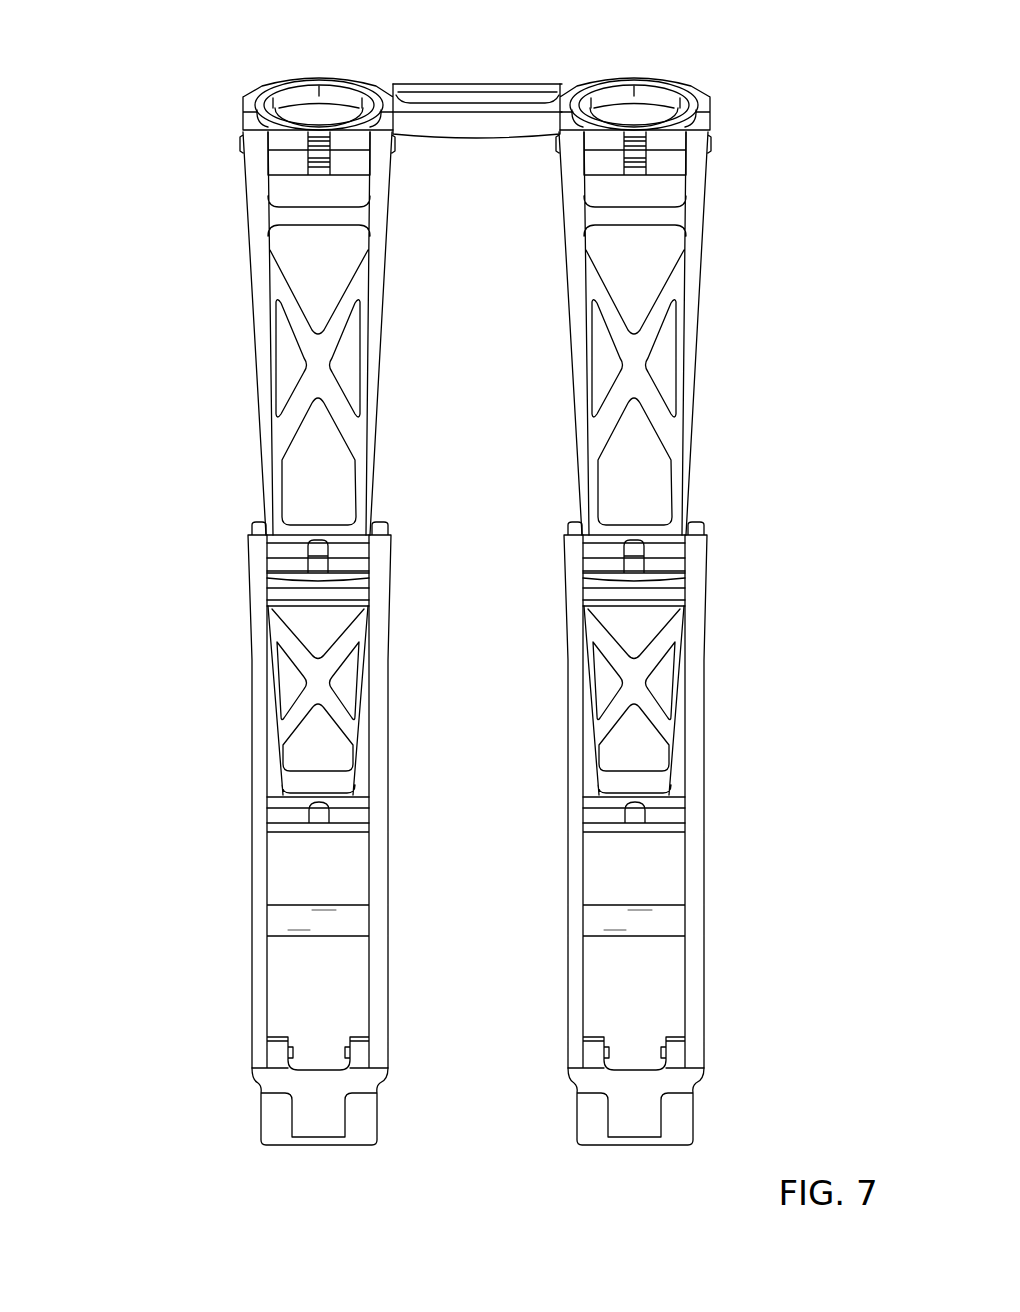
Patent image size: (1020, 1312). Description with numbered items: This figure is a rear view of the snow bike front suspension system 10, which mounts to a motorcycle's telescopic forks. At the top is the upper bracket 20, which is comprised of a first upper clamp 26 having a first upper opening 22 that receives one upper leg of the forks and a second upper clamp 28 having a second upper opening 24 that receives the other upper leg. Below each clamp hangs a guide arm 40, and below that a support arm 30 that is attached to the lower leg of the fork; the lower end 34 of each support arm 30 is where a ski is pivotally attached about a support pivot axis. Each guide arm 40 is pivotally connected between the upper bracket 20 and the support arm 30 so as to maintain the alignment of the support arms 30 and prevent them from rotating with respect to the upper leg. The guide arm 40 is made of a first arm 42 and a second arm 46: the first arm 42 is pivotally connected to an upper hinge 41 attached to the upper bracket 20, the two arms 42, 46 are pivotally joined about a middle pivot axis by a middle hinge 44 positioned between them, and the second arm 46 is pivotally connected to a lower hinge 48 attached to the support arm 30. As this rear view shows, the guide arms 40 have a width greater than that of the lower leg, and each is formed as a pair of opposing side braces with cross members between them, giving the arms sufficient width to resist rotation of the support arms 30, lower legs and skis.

The snow bike front suspension system 10 is at (144, 138).
The upper bracket 20 is at (458, 70).
The first upper opening 22 is at (688, 111).
The second upper opening 24 is at (310, 80).
The first upper clamp 26 is at (638, 79).
The second upper clamp 28 is at (308, 113).
The support arm 30 is at (398, 868).
The lower end 34 is at (320, 1140).
The guide arm 40 is at (397, 362).
The upper hinge 41 is at (350, 177).
The first arm 42 is at (377, 438).
The middle hinge 44 is at (352, 552).
The second arm 46 is at (382, 605).
The lower hinge 48 is at (347, 813).